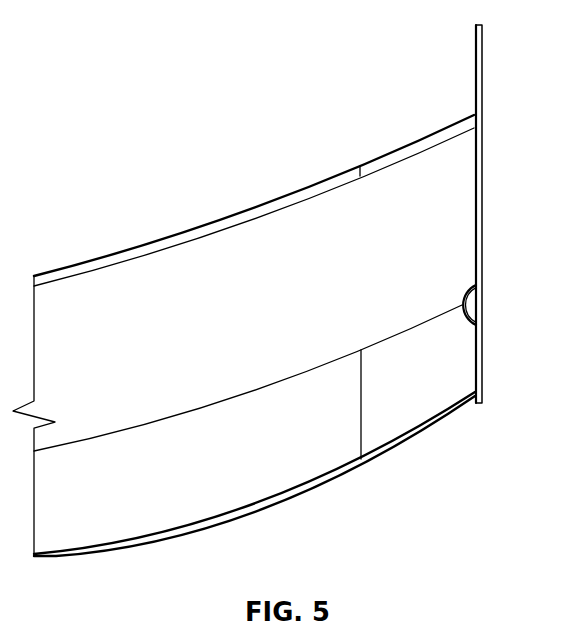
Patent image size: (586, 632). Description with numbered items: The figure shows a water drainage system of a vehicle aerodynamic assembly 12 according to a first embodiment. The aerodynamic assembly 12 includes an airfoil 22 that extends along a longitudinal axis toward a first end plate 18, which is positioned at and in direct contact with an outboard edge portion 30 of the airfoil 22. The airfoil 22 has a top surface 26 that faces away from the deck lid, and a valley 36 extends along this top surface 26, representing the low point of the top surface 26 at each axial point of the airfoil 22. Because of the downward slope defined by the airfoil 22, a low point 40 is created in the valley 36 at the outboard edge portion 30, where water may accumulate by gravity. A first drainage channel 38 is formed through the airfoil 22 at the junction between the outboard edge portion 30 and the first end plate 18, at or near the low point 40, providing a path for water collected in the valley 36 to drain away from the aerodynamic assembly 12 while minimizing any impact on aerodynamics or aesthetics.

The aerodynamic assembly 12 is at (244, 332).
The first end plate 18 is at (482, 65).
The airfoil 22 is at (96, 283).
The top surface 26 is at (142, 375).
The outboard edge portion 30 is at (427, 410).
The valley 36 is at (283, 384).
The first drainage channel 38 is at (471, 302).
The low point 40 is at (471, 333).